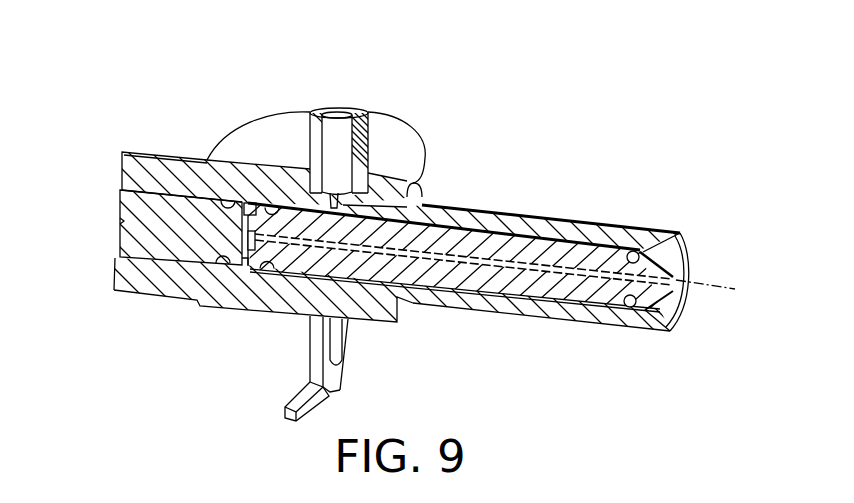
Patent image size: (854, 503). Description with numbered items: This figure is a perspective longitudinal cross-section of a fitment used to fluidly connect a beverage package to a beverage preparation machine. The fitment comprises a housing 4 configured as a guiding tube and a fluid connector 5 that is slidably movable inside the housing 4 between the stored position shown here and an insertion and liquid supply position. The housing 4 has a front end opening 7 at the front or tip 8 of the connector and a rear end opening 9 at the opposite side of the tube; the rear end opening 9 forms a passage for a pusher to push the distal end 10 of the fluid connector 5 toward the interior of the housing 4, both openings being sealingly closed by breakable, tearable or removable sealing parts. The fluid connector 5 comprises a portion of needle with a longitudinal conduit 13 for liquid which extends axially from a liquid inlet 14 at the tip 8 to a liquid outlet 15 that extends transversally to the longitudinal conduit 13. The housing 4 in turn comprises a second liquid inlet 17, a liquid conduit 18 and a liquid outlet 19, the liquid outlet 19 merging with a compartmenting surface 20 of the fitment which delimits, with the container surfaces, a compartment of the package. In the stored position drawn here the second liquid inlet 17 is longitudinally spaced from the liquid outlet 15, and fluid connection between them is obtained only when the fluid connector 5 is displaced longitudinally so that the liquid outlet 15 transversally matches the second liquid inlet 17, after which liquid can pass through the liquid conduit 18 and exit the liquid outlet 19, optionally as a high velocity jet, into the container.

The housing 4 is at (532, 207).
The fluid connector 5 is at (575, 238).
The front end opening 7 is at (680, 307).
The tip 8 is at (660, 242).
The rear end opening 9 is at (120, 247).
The distal end 10 is at (122, 197).
The longitudinal conduit 13 is at (551, 270).
The liquid inlet 14 is at (688, 279).
The liquid outlet 15 is at (243, 200).
The second liquid inlet 17 is at (414, 196).
The liquid conduit 18 is at (345, 160).
The liquid outlet 19 is at (340, 110).
The compartmenting surface 20 is at (277, 142).